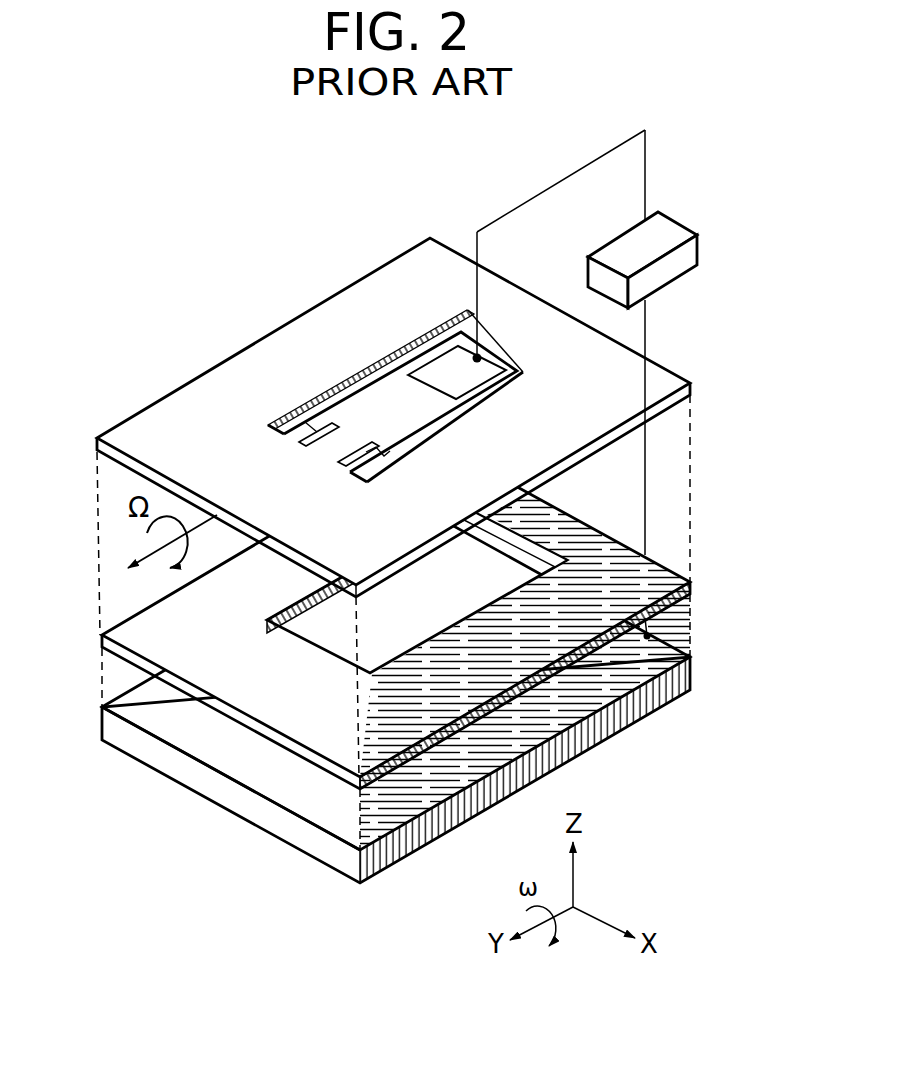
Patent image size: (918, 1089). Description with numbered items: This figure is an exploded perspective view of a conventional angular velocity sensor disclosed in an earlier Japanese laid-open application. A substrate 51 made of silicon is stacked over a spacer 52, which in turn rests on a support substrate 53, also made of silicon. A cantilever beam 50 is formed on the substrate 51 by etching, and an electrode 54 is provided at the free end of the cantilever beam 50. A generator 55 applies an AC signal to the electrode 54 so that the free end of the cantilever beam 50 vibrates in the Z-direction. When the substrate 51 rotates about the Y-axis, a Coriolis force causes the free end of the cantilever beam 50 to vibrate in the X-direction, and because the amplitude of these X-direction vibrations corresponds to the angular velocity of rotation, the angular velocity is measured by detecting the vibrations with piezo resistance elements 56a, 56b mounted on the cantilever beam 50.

The cantilever beam 50 is at (387, 390).
The substrate 51 is at (150, 413).
The spacer 52 is at (100, 643).
The support substrate 53 is at (108, 722).
The electrode 54 is at (447, 362).
The generator 55 is at (700, 246).
The piezo resistance element 56a is at (284, 421).
The piezo resistance element 56b is at (410, 448).